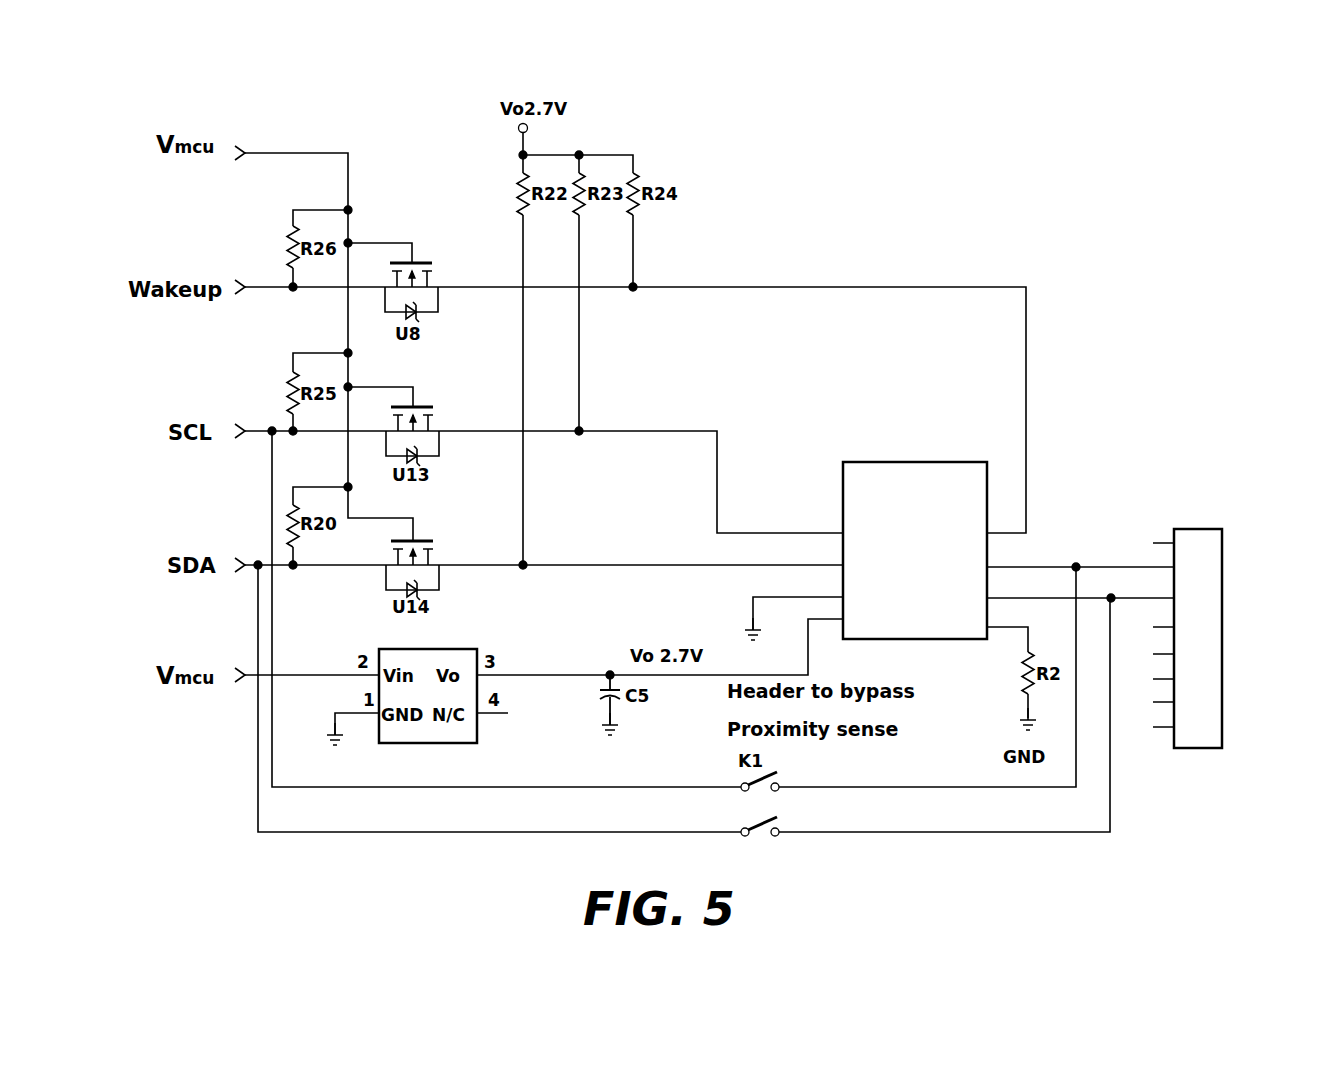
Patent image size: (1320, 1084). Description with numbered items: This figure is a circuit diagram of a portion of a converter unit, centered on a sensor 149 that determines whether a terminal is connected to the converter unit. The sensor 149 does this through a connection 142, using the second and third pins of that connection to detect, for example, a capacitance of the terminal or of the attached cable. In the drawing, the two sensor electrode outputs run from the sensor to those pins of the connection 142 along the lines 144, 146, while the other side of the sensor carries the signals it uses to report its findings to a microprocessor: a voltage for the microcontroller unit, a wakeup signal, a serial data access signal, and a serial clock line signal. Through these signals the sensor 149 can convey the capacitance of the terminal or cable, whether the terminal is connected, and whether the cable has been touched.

The sensor 149 is at (918, 462).
The first electrode lead (EL1) 144 is at (1105, 567).
The second electrode lead (EL2) 146 is at (1133, 600).
The connection 142 is at (1222, 585).